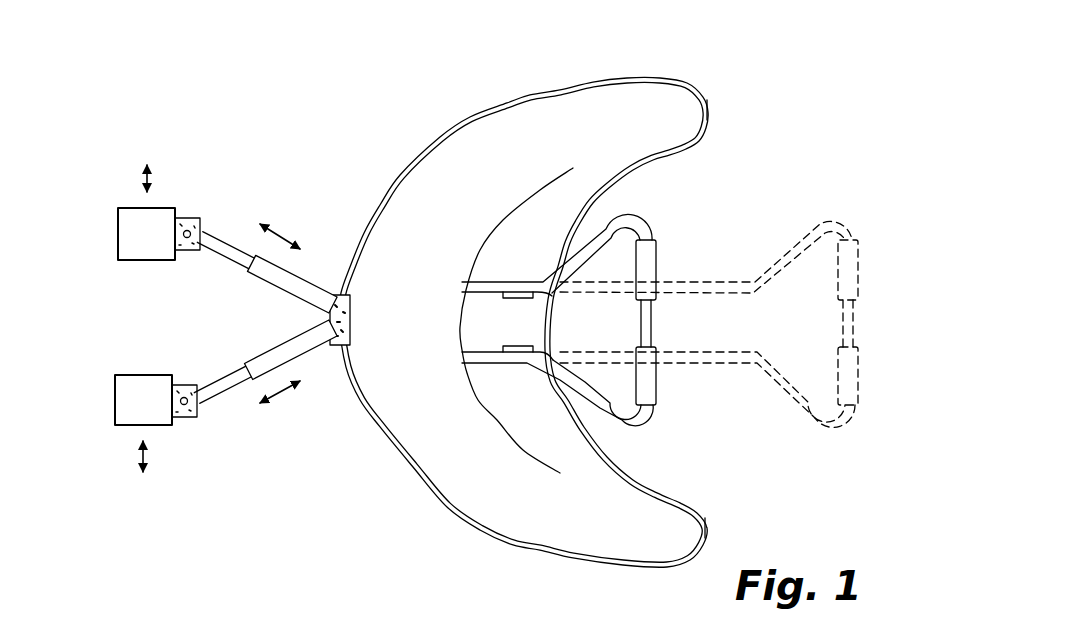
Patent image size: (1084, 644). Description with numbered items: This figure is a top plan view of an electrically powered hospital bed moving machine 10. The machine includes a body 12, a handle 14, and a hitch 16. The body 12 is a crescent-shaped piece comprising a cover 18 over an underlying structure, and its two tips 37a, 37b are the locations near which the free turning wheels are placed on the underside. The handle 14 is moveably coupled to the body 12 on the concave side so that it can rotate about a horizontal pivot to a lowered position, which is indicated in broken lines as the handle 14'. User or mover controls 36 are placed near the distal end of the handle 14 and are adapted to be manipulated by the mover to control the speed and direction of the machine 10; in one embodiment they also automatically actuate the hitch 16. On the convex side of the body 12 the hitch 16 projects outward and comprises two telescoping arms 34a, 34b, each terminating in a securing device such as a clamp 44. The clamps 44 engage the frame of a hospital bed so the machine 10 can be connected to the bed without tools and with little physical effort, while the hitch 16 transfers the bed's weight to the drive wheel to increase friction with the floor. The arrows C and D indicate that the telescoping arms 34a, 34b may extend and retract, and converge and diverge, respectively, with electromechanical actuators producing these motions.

The hospital bed moving machine 10 is at (500, 75).
The body 12 is at (433, 133).
The handle 14 is at (573, 337).
The handle in lowered position 14' is at (709, 339).
The hitch 16 is at (258, 324).
The cover 18 is at (443, 481).
The telescoping arm 34a is at (217, 397).
The telescoping arm 34b is at (220, 240).
The controls 36 is at (657, 400).
The tip of the body 37a is at (710, 101).
The tip of the body 37b is at (706, 517).
The clamp 44 is at (165, 210).
The arrow indicating extend/retract motion C is at (287, 237).
The arrow indicating converge/diverge motion D is at (150, 178).